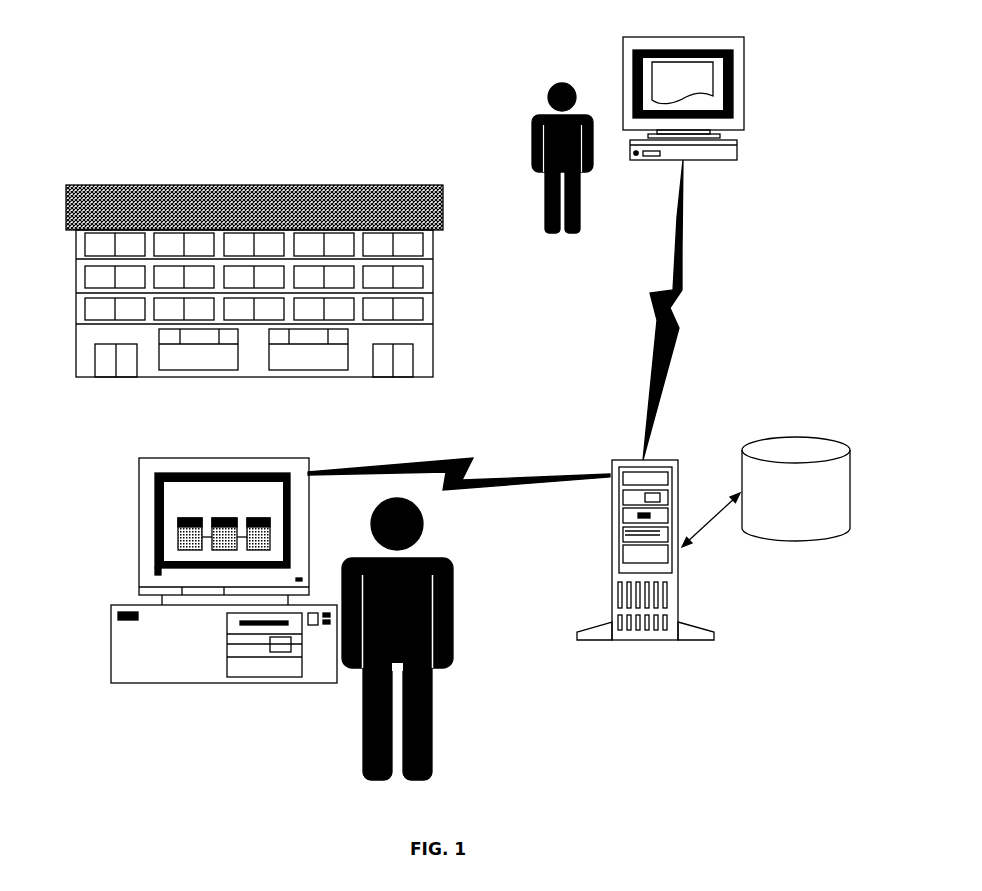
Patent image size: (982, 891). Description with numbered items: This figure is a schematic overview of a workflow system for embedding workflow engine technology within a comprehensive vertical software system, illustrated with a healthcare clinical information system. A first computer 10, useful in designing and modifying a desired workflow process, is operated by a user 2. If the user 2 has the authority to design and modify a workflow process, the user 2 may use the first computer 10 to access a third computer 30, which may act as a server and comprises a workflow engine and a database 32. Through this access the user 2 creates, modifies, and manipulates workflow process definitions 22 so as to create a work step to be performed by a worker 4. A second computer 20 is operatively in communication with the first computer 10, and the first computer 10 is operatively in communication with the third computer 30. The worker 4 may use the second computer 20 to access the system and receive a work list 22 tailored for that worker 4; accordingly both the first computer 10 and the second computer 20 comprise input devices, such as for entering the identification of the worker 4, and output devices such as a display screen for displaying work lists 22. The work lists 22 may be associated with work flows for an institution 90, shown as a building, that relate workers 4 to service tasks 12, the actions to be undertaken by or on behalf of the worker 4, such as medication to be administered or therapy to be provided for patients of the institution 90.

The user 2 is at (437, 687).
The worker 4 is at (530, 145).
The first computer 10 is at (148, 528).
The service task 12 is at (413, 313).
The second computer 20 is at (738, 85).
The work list 22 is at (690, 83).
The third computer 30 is at (622, 540).
The database 32 is at (813, 518).
The institution 90 is at (212, 173).